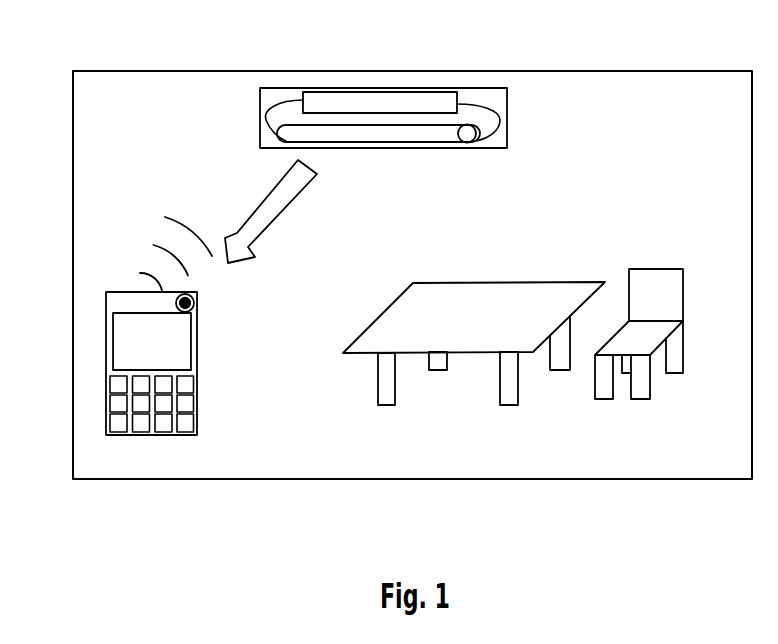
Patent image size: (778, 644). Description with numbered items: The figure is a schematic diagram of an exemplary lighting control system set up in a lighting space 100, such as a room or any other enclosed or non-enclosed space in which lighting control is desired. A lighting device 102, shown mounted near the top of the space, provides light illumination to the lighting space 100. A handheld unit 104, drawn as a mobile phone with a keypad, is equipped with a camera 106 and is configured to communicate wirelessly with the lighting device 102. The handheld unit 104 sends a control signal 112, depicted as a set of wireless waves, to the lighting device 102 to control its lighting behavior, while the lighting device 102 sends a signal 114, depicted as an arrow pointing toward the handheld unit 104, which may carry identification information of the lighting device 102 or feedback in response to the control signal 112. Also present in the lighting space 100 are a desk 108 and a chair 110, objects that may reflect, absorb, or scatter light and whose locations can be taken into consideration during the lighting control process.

The lighting space 100 is at (73, 68).
The lighting device 102 is at (507, 115).
The handheld unit 104 is at (110, 403).
The camera 106 is at (196, 306).
The desk 108 is at (500, 283).
The chair 110 is at (665, 269).
The control signal 112 is at (162, 228).
The signal 114 is at (282, 218).